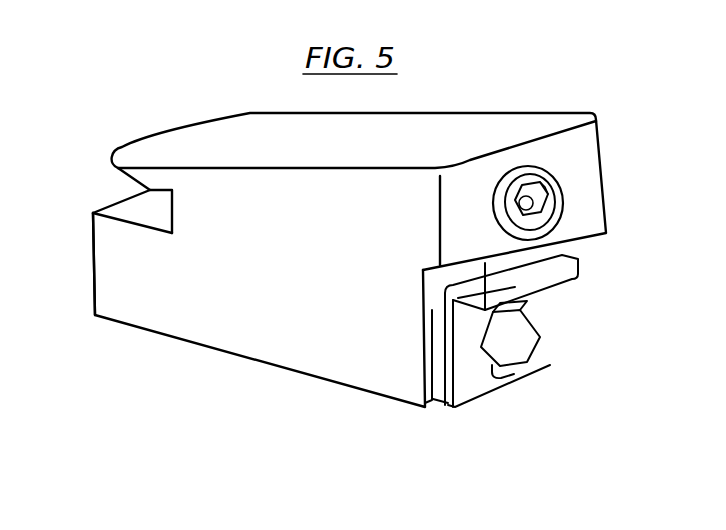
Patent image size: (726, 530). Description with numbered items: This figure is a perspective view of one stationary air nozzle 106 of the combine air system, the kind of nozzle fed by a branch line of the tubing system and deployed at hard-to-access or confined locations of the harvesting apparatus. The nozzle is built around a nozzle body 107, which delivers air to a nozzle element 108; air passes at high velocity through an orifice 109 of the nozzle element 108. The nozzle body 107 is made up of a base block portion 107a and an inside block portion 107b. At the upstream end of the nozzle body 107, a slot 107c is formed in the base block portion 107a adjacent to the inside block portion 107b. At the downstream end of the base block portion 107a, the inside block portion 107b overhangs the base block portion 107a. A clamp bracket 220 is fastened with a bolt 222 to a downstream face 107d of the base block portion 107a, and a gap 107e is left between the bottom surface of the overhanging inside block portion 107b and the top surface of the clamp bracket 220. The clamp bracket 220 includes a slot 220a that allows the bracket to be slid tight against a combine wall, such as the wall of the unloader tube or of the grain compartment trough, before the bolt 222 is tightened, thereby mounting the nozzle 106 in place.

The stationary nozzle 106 is at (243, 326).
The nozzle body 107 is at (313, 327).
The base block portion 107a is at (166, 307).
The inside block portion 107b is at (246, 195).
The slot 107c is at (172, 222).
The downstream face 107d is at (437, 399).
The gap 107e is at (560, 290).
The nozzle element 108 is at (542, 175).
The orifice 109 is at (540, 210).
The clamp bracket 220 is at (547, 366).
The bolt 222 is at (520, 357).
The slot 220a is at (497, 373).